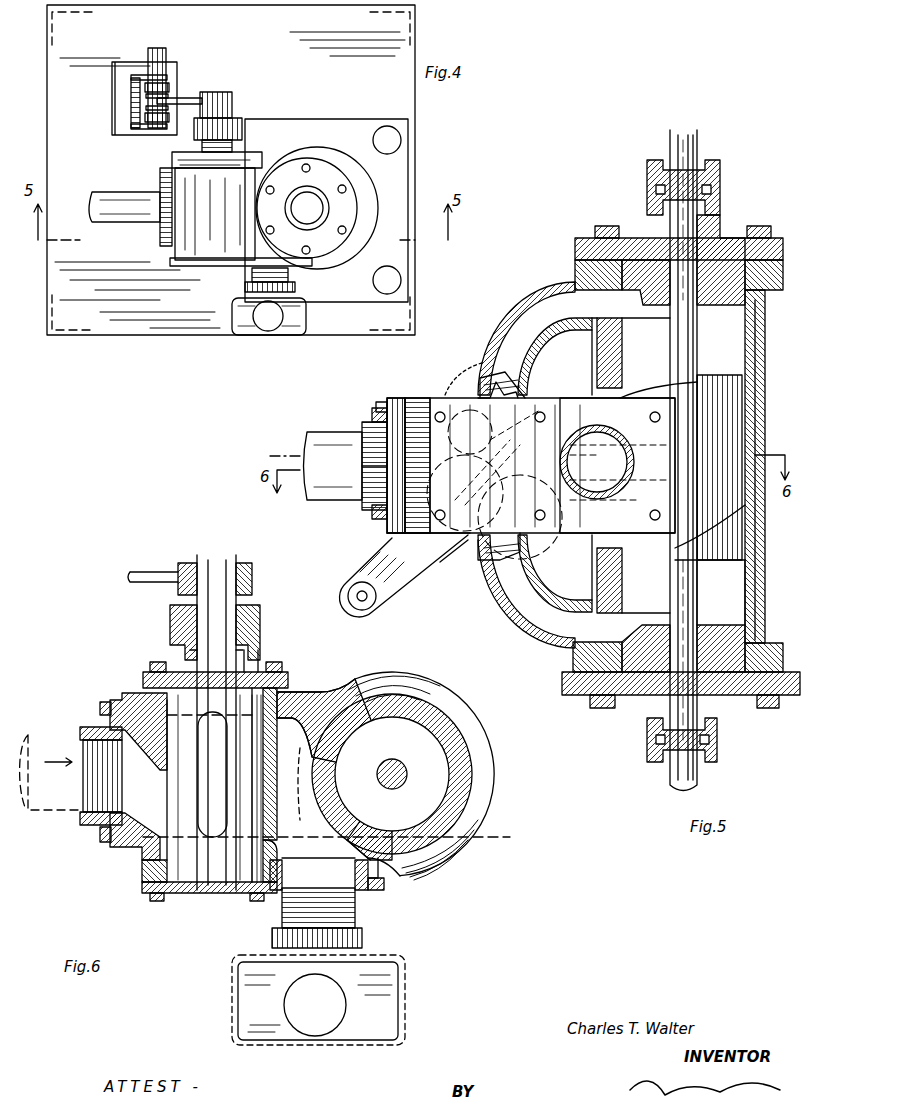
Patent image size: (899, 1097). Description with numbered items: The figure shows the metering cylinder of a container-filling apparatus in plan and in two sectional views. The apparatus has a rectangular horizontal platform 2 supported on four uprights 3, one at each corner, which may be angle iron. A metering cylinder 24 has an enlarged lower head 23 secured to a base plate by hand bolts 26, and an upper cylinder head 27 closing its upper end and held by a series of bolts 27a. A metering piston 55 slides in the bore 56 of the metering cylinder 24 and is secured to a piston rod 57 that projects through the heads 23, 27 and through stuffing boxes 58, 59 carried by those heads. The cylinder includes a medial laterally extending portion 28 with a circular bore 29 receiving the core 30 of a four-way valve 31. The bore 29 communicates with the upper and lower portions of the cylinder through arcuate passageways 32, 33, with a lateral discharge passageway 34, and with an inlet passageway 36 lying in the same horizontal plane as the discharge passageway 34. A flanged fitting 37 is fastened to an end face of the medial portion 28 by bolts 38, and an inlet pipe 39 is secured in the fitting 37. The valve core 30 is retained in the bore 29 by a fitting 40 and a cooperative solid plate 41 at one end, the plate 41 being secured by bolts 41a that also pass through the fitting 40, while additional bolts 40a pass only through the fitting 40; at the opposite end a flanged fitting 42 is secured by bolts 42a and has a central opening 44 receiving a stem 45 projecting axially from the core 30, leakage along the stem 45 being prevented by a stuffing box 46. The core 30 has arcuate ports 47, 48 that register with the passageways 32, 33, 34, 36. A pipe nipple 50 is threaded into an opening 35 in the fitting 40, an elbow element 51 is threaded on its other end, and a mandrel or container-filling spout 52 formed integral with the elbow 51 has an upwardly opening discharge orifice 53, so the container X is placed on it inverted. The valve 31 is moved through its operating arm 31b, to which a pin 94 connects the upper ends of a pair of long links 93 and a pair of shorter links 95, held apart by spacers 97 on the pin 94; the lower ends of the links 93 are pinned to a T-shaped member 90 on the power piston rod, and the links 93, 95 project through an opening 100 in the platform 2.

In FIG. 4, the horizontal platform 2 is at (118, 328).
In FIG. 4, the uprights 3 is at (372, 22).
In FIG. 5, the lower head 23 is at (745, 698).
In FIG. 5, the metering cylinder 24 is at (765, 345).
In FIG. 6, the metering cylinder 24 is at (470, 820).
In FIG. 4, the hand bolts 26 is at (387, 138).
In FIG. 5, the upper cylinder head 27 is at (580, 240).
In FIG. 5, the bolts 27a is at (757, 225).
In FIG. 5, the medial laterally extending portion 28 is at (430, 397).
In FIG. 6, the medial laterally extending portion 28 is at (134, 891).
In FIG. 5, the circular bore 29 is at (480, 461).
In FIG. 6, the circular bore 29 is at (255, 732).
In FIG. 5, the valve core 30 is at (462, 446).
In FIG. 6, the valve core 30 is at (143, 868).
In FIG. 4, the four-way valve 31 is at (163, 160).
In FIG. 5, the four-way valve 31 is at (428, 546).
In FIG. 6, the four-way valve 31 is at (260, 604).
In FIG. 4, the operating arm 31b is at (185, 98).
In FIG. 5, the operating arm 31b is at (400, 588).
In FIG. 6, the operating arm 31b is at (155, 570).
In FIG. 5, the arcuate passageway 32 is at (548, 302).
In FIG. 5, the arcuate passageway 33 is at (528, 618).
In FIG. 5, the lateral discharge passageway 34 is at (615, 460).
In FIG. 6, the lateral discharge passageway 34 is at (298, 842).
In FIG. 6, the opening 35 is at (332, 880).
In FIG. 5, the inlet passageway 36 is at (372, 462).
In FIG. 6, the inlet passageway 36 is at (112, 782).
In FIG. 5, the flanged fitting 37 is at (392, 402).
In FIG. 6, the flanged fitting 37 is at (112, 700).
In FIG. 5, the bolts 38 is at (372, 413).
In FIG. 6, the bolts 38 is at (102, 702).
In FIG. 4, the inlet pipe 39 is at (105, 195).
In FIG. 5, the inlet pipe 39 is at (332, 500).
In FIG. 6, the inlet pipe 39 is at (50, 755).
In FIG. 5, the fitting 40 is at (674, 412).
In FIG. 6, the fitting 40 is at (382, 870).
In FIG. 6, the bolts 40a is at (384, 890).
In FIG. 5, the plate 41 is at (528, 410).
In FIG. 6, the plate 41 is at (200, 893).
In FIG. 5, the bolts 41a is at (540, 535).
In FIG. 6, the bolts 41a is at (156, 898).
In FIG. 6, the flanged fitting 42 is at (282, 674).
In FIG. 6, the bolts 42a is at (158, 662).
In FIG. 6, the central opening 44 is at (262, 675).
In FIG. 6, the stem 45 is at (215, 565).
In FIG. 4, the stuffing box 46 is at (236, 120).
In FIG. 6, the stuffing box 46 is at (170, 625).
In FIG. 5, the arcuate port 47 is at (453, 560).
In FIG. 5, the arcuate port 48 is at (505, 422).
In FIG. 6, the arcuate port 48 is at (205, 793).
In FIG. 5, the nipple 50 is at (625, 392).
In FIG. 6, the nipple 50 is at (355, 913).
In FIG. 6, the elbow element 51 is at (365, 940).
In FIG. 6, the mandrel 52 is at (382, 1004).
In FIG. 6, the discharge orifice 53 is at (332, 1018).
In FIG. 5, the metering piston 55 is at (742, 545).
In FIG. 6, the metering piston 55 is at (430, 762).
In FIG. 5, the bore 56 is at (740, 594).
In FIG. 6, the bore 56 is at (448, 778).
In FIG. 5, the piston rod 57 is at (690, 772).
In FIG. 6, the piston rod 57 is at (396, 764).
In FIG. 5, the stuffing box 58 is at (647, 745).
In FIG. 5, the stuffing box 59 is at (712, 178).
In FIG. 4, the T-shaped member 90 is at (132, 90).
In FIG. 4, the long links 93 is at (138, 74).
In FIG. 4, the pin 94 is at (155, 52).
In FIG. 4, the shorter links 95 is at (168, 94).
In FIG. 4, the spacers 97 is at (168, 84).
In FIG. 4, the opening 100 is at (112, 64).